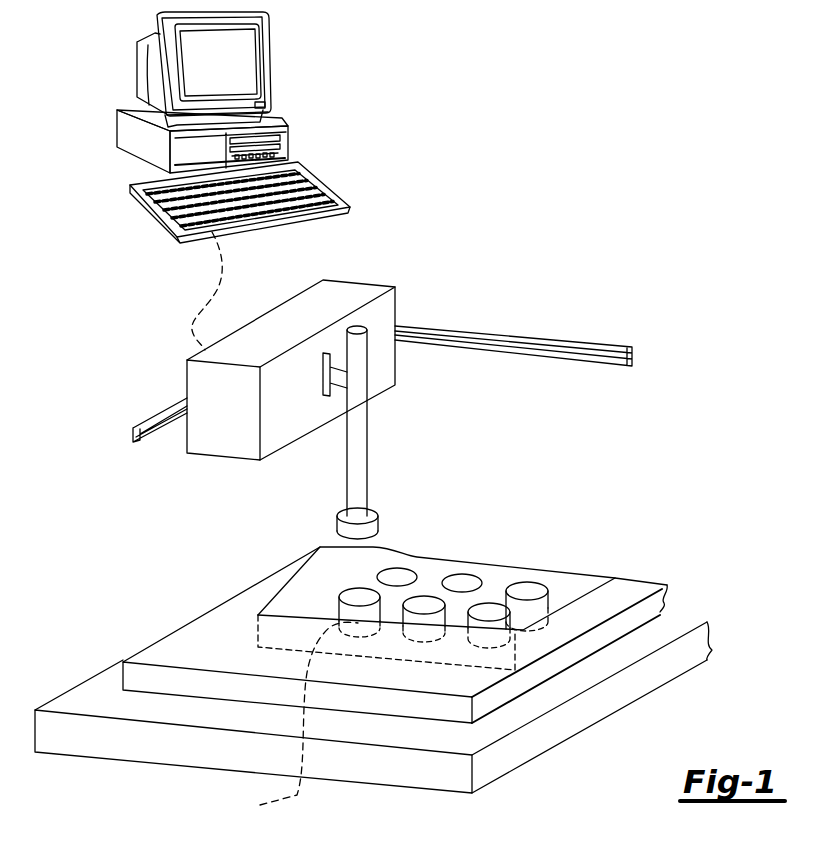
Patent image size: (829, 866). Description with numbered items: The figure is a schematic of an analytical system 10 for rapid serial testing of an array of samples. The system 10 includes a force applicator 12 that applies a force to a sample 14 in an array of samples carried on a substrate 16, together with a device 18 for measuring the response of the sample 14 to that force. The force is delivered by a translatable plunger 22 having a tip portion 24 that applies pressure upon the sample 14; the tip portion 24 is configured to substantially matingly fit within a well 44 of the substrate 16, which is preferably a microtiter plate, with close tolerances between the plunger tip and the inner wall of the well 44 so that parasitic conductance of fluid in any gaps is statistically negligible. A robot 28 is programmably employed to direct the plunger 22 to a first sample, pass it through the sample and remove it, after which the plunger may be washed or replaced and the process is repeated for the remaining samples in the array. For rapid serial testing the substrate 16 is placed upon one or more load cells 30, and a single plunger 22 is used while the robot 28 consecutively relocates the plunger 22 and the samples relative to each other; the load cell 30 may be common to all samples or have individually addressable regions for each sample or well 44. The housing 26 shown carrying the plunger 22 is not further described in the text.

The system 10 is at (637, 472).
The force applicator 12 is at (477, 325).
The sample 14 is at (350, 614).
The substrate 16 is at (587, 580).
The device for measuring the response 18 is at (657, 638).
The translatable plunger 22 is at (367, 465).
The tip portion 24 is at (337, 525).
The laser head housing 26 is at (342, 297).
The robot 28 is at (273, 55).
The load cell 30 is at (660, 607).
The well 44 is at (298, 720).